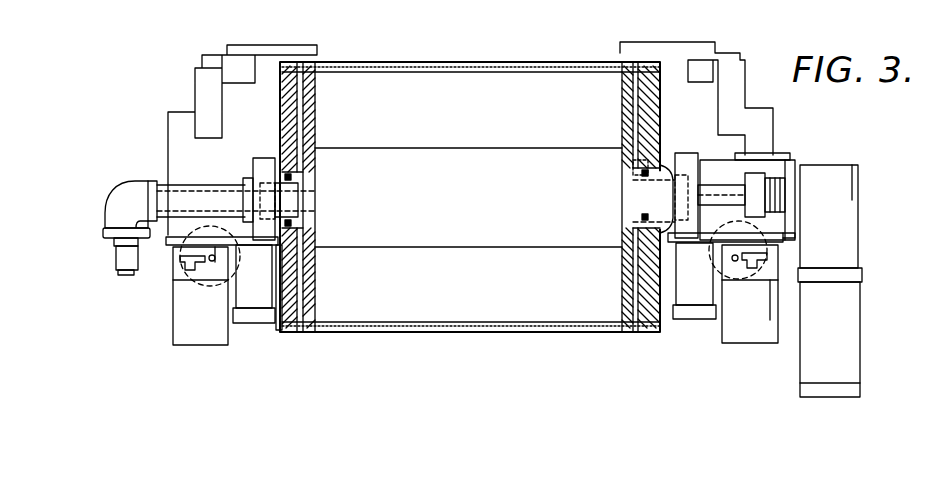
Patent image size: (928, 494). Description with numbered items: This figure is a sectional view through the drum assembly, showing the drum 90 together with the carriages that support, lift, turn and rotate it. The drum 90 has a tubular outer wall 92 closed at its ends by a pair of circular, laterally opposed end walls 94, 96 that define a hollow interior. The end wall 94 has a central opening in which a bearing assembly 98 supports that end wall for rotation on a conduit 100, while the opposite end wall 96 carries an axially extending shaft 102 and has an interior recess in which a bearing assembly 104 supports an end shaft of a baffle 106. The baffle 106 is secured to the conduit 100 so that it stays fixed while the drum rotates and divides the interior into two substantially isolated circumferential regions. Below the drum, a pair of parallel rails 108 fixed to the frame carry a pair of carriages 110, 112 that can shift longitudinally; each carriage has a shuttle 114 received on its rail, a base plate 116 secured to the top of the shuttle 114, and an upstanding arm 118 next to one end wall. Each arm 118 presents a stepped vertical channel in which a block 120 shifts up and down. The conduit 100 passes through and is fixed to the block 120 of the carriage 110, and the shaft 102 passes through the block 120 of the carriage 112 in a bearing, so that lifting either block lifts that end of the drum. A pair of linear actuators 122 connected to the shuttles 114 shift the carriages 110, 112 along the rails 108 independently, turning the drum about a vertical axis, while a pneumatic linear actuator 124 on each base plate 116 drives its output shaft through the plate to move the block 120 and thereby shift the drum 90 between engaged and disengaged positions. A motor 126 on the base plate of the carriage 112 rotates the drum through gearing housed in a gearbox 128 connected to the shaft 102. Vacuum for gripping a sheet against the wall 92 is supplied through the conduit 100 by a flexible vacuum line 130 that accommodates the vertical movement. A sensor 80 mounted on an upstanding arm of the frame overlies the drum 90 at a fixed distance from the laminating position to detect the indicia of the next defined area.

The sensor 80 is at (307, 48).
The drum 90 is at (468, 197).
The tubular outer wall 92 is at (400, 332).
The end wall 94 is at (282, 87).
The end wall 96 is at (650, 100).
The bearing assembly 98 is at (315, 197).
The conduit 100 is at (168, 192).
The shaft 102 is at (735, 190).
The bearing assembly 104 is at (645, 197).
The baffle 106 is at (508, 297).
The rails 108 is at (190, 270).
The carriage 110 is at (485, 308).
The carriage 112 is at (800, 155).
The shuttle 114 is at (172, 257).
The base plate 116 is at (284, 245).
The upstanding arm 118 is at (253, 165).
The block 120 is at (240, 198).
The linear actuators 122 is at (642, 288).
The pneumatic linear actuator 124 is at (256, 318).
The motor 126 is at (848, 345).
The gearbox 128 is at (850, 190).
The flexible vacuum line 130 is at (118, 266).